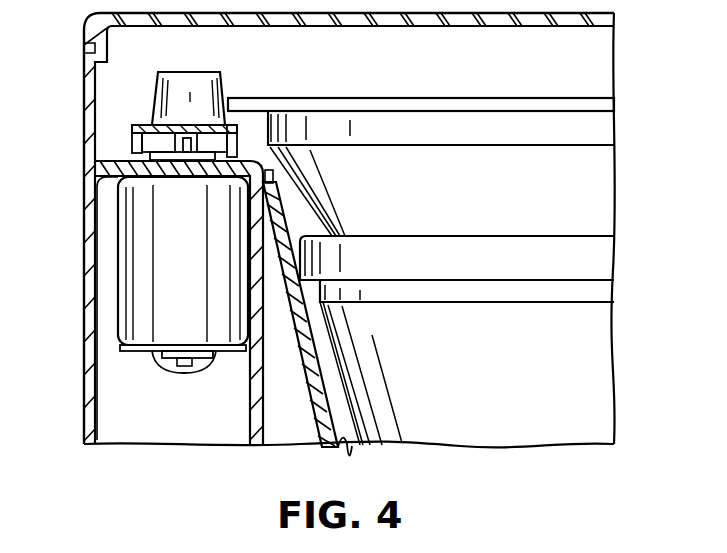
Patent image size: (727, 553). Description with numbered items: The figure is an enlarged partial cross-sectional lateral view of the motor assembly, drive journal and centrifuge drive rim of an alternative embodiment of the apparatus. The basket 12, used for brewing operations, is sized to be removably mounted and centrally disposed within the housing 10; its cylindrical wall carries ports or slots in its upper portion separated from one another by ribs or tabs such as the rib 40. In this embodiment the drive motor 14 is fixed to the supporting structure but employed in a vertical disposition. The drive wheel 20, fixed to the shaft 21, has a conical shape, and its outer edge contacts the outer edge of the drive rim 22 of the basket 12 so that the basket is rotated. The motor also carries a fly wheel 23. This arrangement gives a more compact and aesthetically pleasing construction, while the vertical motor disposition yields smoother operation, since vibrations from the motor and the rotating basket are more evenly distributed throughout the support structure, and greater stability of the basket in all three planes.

The housing 10 is at (324, 418).
The basket 12 is at (586, 209).
The drive motor 14 is at (137, 263).
The drive wheel 20 is at (182, 72).
The shaft 21 is at (141, 148).
The drive rim 22 is at (238, 97).
The fly wheel 23 is at (132, 128).
The rib 40 is at (318, 338).